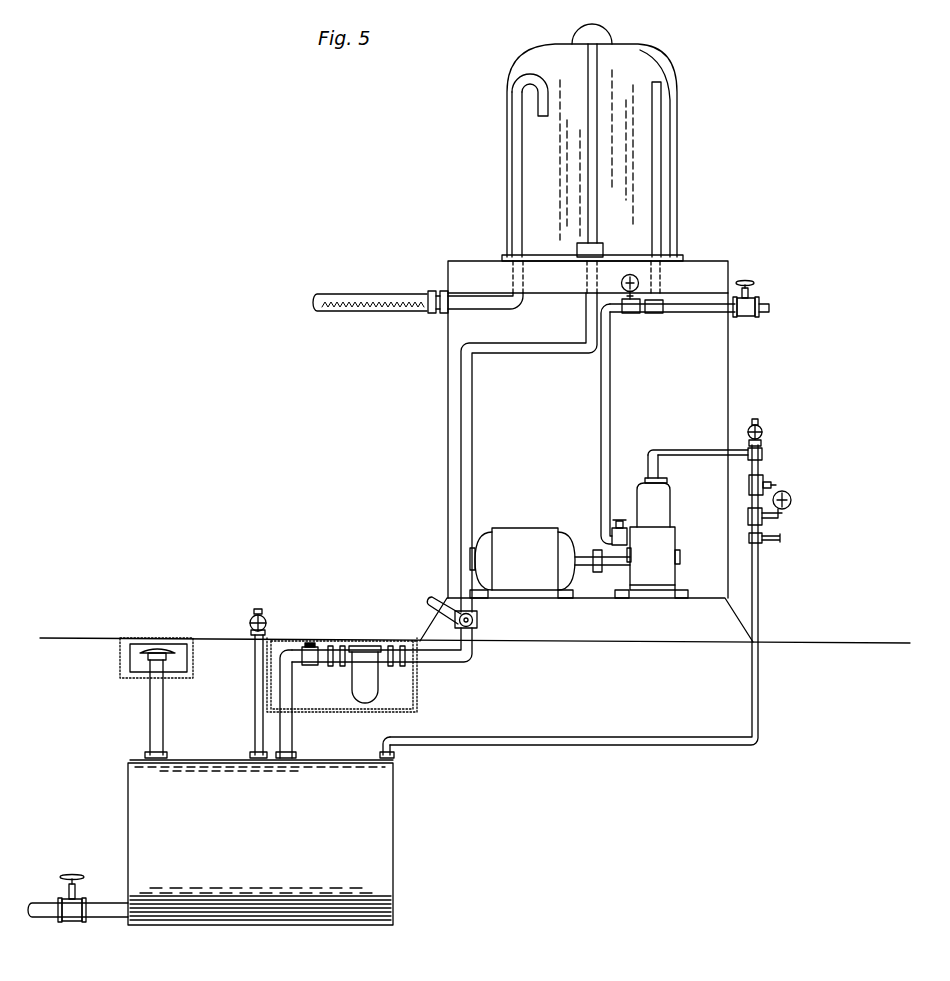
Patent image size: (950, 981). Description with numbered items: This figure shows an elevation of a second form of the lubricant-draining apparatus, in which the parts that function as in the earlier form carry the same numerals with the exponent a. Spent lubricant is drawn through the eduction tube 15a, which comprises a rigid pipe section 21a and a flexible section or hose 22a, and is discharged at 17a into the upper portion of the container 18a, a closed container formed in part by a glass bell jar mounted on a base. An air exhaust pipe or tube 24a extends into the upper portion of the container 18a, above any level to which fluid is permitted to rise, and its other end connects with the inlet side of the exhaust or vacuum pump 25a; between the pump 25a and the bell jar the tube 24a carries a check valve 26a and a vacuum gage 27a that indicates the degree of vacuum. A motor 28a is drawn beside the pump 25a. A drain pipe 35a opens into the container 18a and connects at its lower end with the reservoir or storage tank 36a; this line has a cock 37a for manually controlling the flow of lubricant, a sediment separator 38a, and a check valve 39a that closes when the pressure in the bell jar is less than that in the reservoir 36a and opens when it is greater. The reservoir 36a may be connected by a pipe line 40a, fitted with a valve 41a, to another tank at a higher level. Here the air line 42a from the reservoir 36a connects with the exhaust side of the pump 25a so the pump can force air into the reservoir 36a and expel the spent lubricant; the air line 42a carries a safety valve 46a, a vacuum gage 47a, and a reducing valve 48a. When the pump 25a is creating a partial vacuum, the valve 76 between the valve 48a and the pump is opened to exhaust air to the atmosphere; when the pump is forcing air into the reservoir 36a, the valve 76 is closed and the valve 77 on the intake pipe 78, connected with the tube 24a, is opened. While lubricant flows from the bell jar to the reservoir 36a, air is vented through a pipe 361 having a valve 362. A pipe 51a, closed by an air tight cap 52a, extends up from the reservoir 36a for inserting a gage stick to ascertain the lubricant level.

The eduction tube 15a is at (337, 319).
The discharge point of eduction tube 17a is at (531, 78).
The container 18a is at (675, 147).
The rigid pipe section 21a is at (520, 168).
The flexible section or hose 22a is at (352, 279).
The air exhaust pipe or tube 24a is at (609, 388).
The exhaust or vacuum pump 25a is at (667, 546).
The check valve 26a is at (620, 520).
The vacuum gage 27a is at (622, 284).
The motor 28a is at (523, 535).
The drain pipe 35a is at (463, 407).
The reservoir or storage tank 36a is at (392, 838).
The cock 37a is at (478, 623).
The sediment separator 38a is at (379, 690).
The check valve 39a is at (311, 664).
The pipe line 40a is at (53, 918).
The valve 41a is at (78, 922).
The air line 42a is at (678, 452).
The safety valve 46a is at (781, 538).
The vacuum gage 47a is at (791, 497).
The reducing valve 48a is at (771, 482).
The pipe 51a is at (164, 717).
The air tight cap 52a is at (156, 640).
The valve 76 is at (763, 431).
The valve 77 is at (758, 302).
The intake pipe 78 is at (770, 309).
The pipe 361 is at (256, 672).
The valve 362 is at (267, 618).